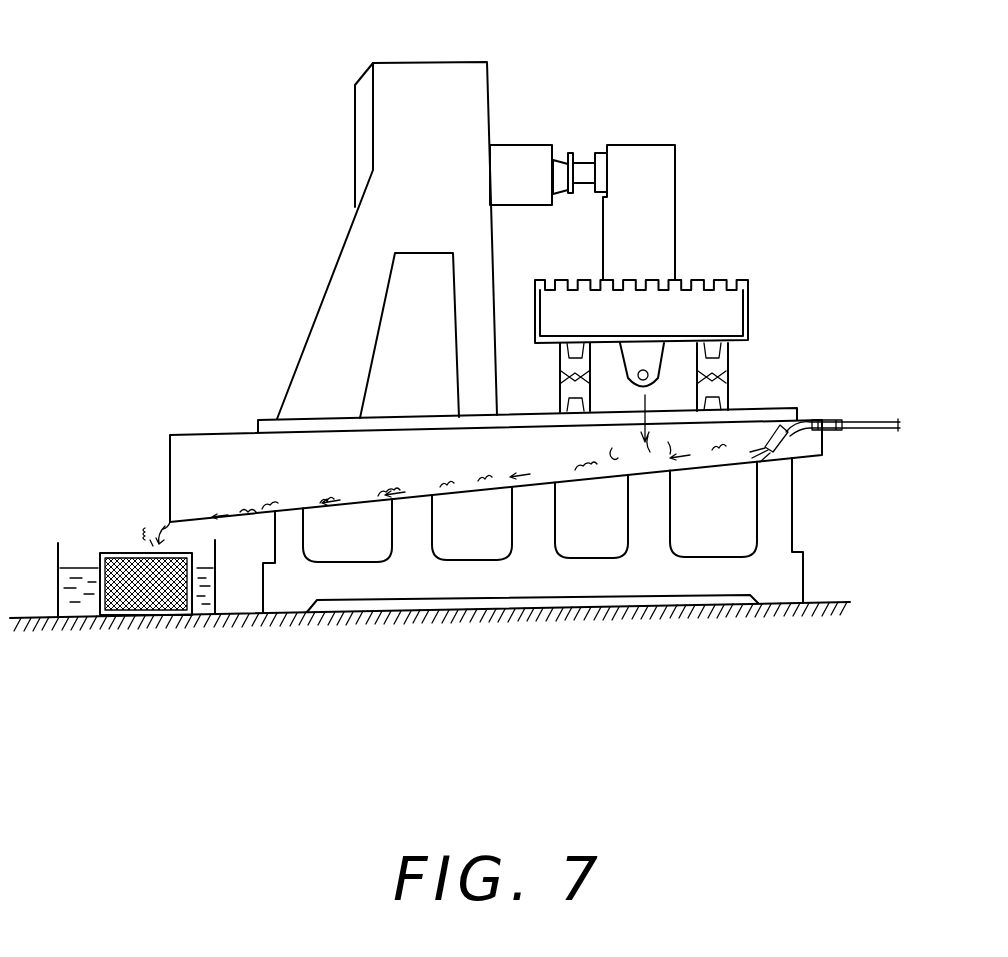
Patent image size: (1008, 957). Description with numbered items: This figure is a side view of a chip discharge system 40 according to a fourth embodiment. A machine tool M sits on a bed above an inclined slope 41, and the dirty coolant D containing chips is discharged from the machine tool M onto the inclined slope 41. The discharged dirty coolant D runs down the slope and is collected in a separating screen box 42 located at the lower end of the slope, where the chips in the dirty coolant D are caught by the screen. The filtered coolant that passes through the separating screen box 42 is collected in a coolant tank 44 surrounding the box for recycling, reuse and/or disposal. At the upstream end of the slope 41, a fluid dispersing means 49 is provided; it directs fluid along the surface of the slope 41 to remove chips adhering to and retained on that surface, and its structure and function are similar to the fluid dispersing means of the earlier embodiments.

The machine tool M is at (438, 80).
The chip discharge system 40 is at (592, 637).
The inclined slope 41 is at (470, 487).
The separating screen box 42 is at (123, 607).
The coolant tank 44 is at (207, 608).
The fluid dispersing means 49 is at (785, 440).
The dirty coolant D is at (647, 402).